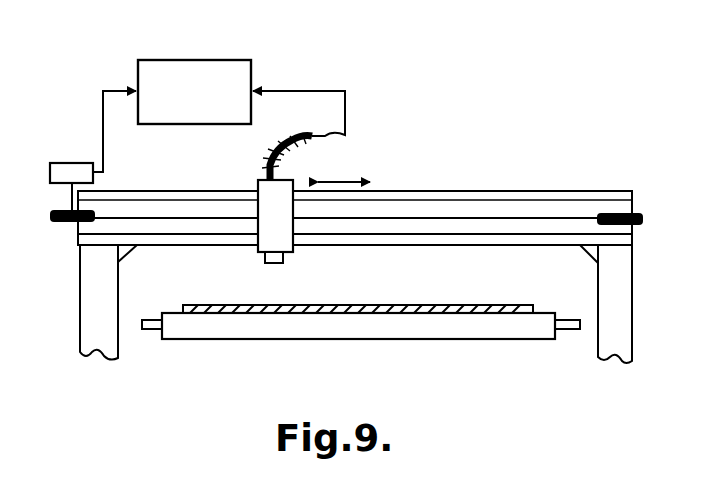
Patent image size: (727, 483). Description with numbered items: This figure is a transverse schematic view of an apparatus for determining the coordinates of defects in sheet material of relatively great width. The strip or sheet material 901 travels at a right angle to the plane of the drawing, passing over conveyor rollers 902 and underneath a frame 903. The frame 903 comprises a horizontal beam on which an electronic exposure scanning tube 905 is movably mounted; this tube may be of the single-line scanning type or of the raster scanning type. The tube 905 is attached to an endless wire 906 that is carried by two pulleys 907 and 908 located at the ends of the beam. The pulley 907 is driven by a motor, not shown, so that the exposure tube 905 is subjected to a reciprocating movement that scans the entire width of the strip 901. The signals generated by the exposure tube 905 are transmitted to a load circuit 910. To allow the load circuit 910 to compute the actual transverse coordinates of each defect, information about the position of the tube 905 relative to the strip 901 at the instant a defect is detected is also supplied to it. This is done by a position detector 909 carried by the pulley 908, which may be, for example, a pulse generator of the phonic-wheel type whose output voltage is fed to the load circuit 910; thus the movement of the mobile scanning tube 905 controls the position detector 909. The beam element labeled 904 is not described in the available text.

The strip or sheet material 901 is at (423, 305).
The conveyor rollers 902 is at (502, 327).
The frame 903 is at (580, 185).
The upper rail 904 is at (429, 196).
The electronic exposure scanning tube 905 is at (293, 183).
The endless wire 906 is at (448, 218).
The pulley 907 is at (637, 213).
The pulley 908 is at (60, 222).
The position detector 909 is at (55, 160).
The load circuit 910 is at (200, 60).